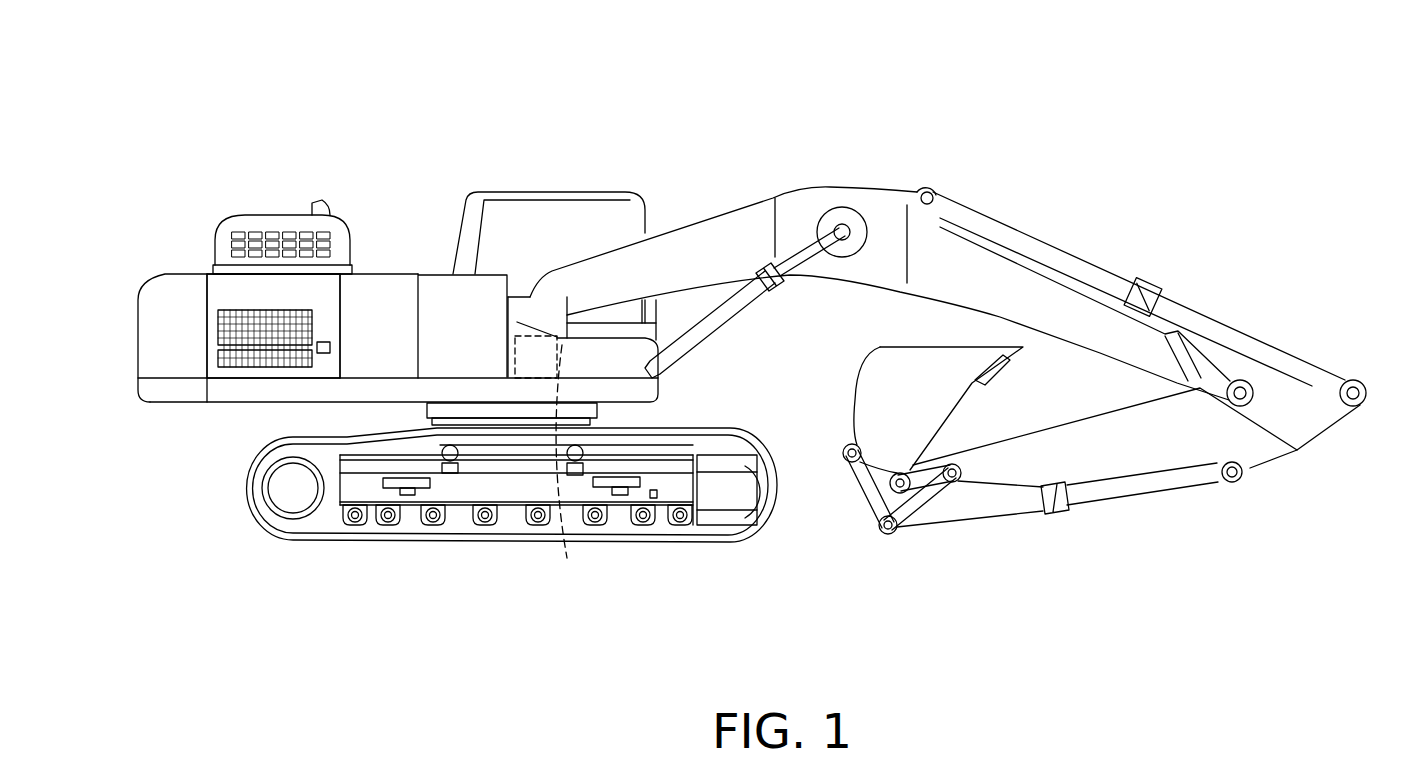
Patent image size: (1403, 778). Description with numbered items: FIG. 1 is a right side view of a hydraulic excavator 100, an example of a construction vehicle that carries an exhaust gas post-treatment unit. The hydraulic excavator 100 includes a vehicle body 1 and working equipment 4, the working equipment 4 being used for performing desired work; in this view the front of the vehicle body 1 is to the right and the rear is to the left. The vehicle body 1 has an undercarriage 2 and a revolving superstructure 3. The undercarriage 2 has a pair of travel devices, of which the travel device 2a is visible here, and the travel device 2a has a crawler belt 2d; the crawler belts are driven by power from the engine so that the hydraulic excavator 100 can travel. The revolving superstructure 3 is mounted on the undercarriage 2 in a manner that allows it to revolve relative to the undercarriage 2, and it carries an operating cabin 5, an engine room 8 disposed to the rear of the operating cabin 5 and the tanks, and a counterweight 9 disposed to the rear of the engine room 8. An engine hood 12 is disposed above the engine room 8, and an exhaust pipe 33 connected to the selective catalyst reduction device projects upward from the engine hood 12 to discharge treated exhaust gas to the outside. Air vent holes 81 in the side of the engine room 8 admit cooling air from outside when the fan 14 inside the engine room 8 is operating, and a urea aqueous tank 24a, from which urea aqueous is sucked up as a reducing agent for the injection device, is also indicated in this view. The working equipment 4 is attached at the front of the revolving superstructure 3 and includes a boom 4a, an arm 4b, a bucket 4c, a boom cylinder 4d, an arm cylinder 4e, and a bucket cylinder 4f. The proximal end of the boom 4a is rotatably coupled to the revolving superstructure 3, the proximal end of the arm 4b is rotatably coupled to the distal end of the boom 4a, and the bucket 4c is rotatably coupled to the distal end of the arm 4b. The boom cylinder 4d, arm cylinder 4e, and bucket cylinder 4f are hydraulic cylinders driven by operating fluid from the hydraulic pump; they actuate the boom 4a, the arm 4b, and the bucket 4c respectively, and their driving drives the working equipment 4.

The vehicle body 1 is at (500, 120).
The hydraulic excavator 100 is at (730, 118).
The undercarriage 2 is at (425, 545).
The travel device 2a is at (290, 490).
The crawler belt 2d is at (735, 430).
The urea aqueous tank 24a is at (581, 469).
The revolving superstructure 3 is at (397, 157).
The working equipment 4 is at (1130, 250).
The boom 4a is at (738, 218).
The arm 4b is at (1200, 437).
The bucket 4c is at (877, 383).
The boom cylinder 4d is at (770, 282).
The arm cylinder 4e is at (1040, 246).
The bucket cylinder 4f is at (1103, 490).
The operating cabin 5 is at (604, 187).
The engine room 8 is at (272, 293).
The air vent holes 81 is at (232, 330).
The counterweight 9 is at (180, 313).
The engine hood 12 is at (232, 217).
The fan 14 is at (458, 313).
The exhaust pipe 33 is at (313, 203).